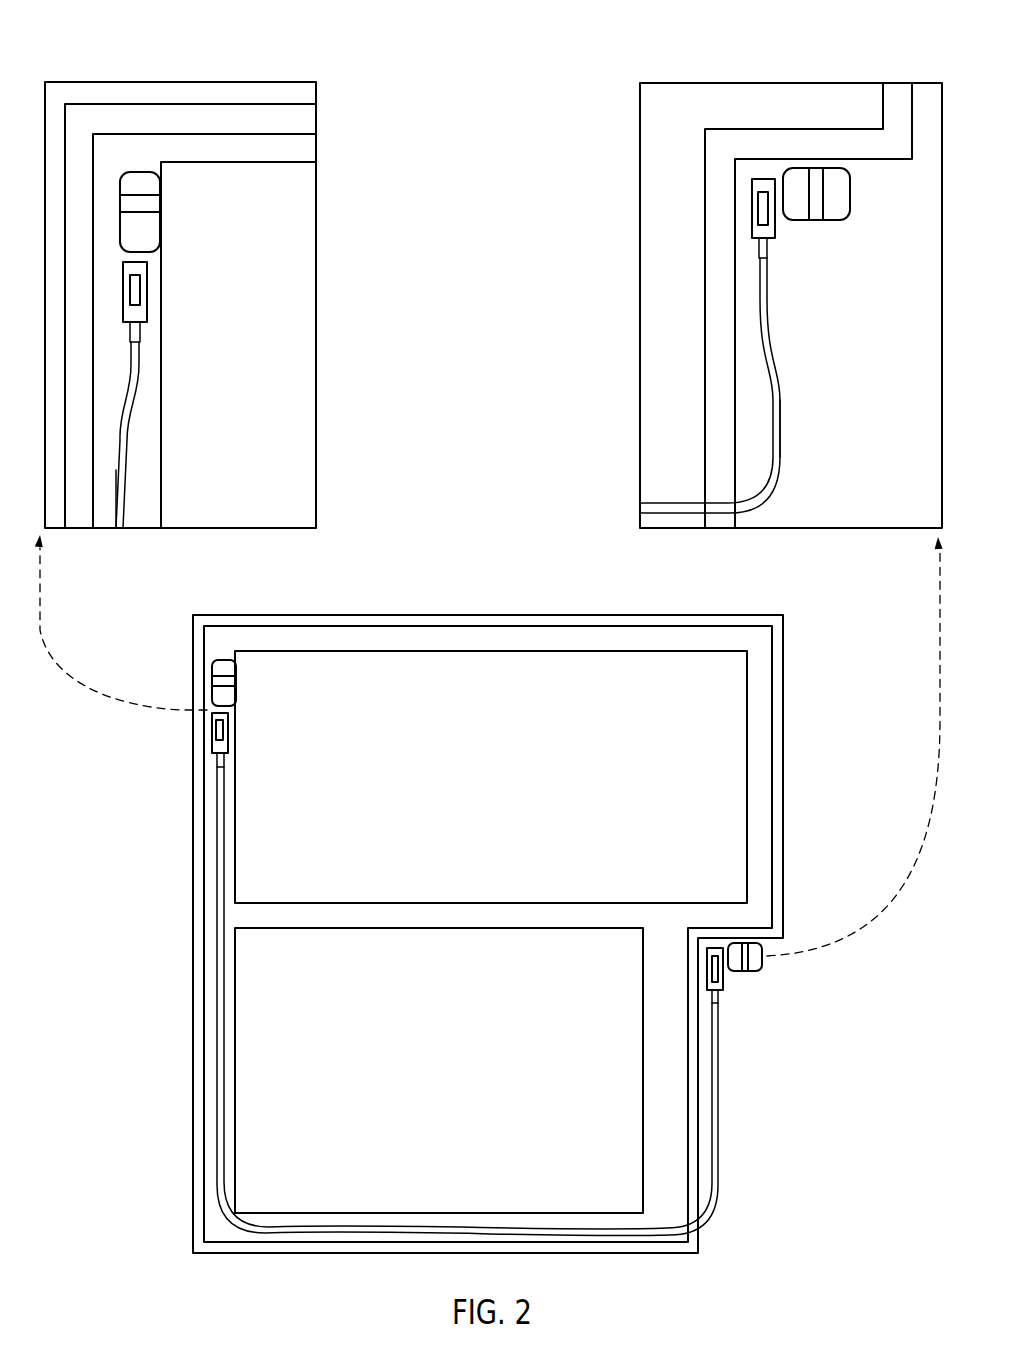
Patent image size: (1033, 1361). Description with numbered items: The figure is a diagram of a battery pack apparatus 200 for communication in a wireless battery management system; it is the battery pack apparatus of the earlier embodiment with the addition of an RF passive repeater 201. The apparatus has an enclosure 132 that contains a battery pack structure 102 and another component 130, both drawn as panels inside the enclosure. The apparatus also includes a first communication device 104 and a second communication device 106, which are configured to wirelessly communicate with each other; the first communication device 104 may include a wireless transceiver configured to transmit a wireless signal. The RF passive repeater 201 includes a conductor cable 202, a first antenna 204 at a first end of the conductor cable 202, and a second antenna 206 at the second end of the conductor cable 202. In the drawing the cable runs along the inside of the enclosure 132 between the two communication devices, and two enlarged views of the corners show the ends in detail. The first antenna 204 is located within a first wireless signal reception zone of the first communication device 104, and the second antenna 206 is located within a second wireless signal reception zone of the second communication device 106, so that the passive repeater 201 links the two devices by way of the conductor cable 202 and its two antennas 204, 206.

The battery pack apparatus 200 is at (534, 38).
The battery pack structure 102 is at (490, 665).
The enclosure 132 is at (577, 612).
The another component 130 is at (230, 1112).
The second communication device 106 is at (172, 187).
The second antenna 206 is at (160, 288).
The first communication device 104 is at (776, 164).
The first antenna 204 is at (738, 199).
The RF passive repeater 201 is at (148, 387).
The conductor cable 202 is at (138, 437).